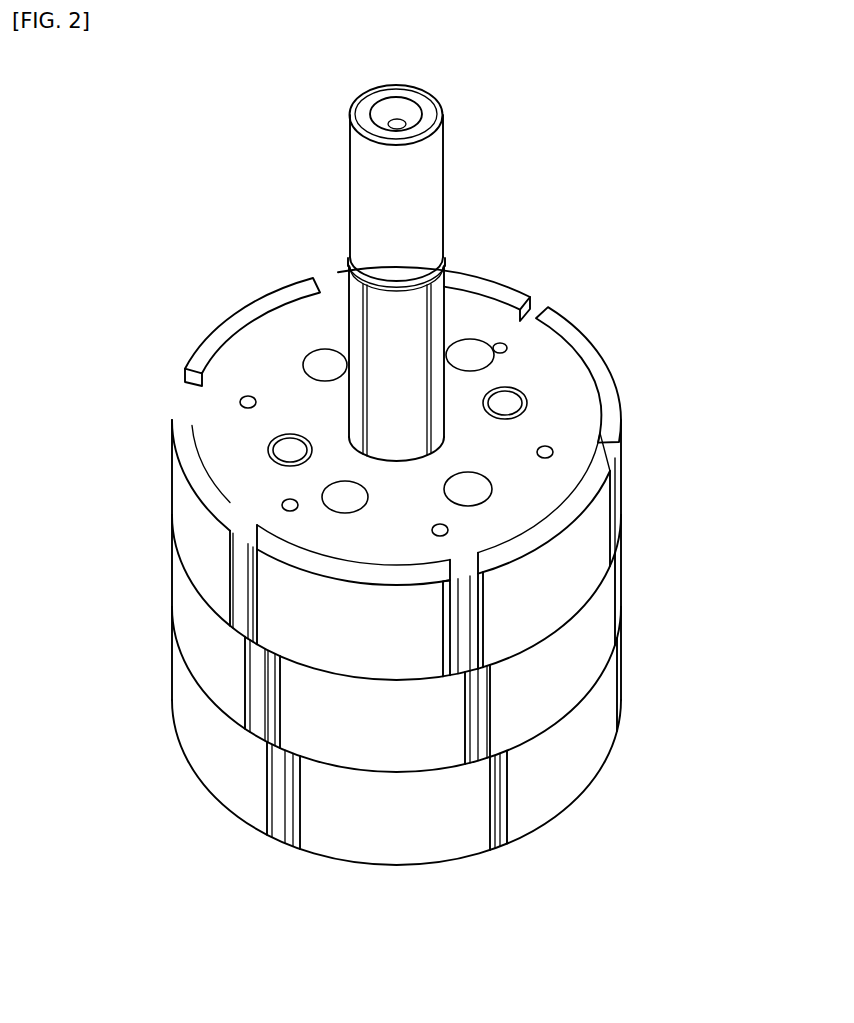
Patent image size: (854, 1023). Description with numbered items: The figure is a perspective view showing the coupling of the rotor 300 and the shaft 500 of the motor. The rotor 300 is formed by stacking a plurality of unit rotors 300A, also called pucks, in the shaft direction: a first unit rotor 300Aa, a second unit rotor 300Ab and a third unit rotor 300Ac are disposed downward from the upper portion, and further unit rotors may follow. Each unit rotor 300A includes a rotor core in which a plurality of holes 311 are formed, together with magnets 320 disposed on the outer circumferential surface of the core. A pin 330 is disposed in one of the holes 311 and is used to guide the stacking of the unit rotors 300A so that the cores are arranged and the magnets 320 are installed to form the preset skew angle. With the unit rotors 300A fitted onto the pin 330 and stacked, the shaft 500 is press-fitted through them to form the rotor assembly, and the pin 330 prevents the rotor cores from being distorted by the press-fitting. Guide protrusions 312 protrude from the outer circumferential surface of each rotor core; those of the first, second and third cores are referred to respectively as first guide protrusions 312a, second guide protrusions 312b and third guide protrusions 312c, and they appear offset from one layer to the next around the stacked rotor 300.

The shaft 500 is at (459, 124).
The magnet 320 is at (282, 298).
The hole 311 is at (285, 448).
The pin 330 is at (272, 443).
The rotor 300 is at (422, 551).
The unit rotor 300A is at (392, 551).
The first unit rotor 300Aa is at (432, 459).
The second unit rotor 300Ab is at (648, 573).
The third unit rotor 300Ac is at (648, 668).
The guide protrusion 312 is at (261, 690).
The first guide protrusion 312a is at (255, 558).
The second guide protrusion 312b is at (275, 687).
The third guide protrusion 312c is at (280, 785).